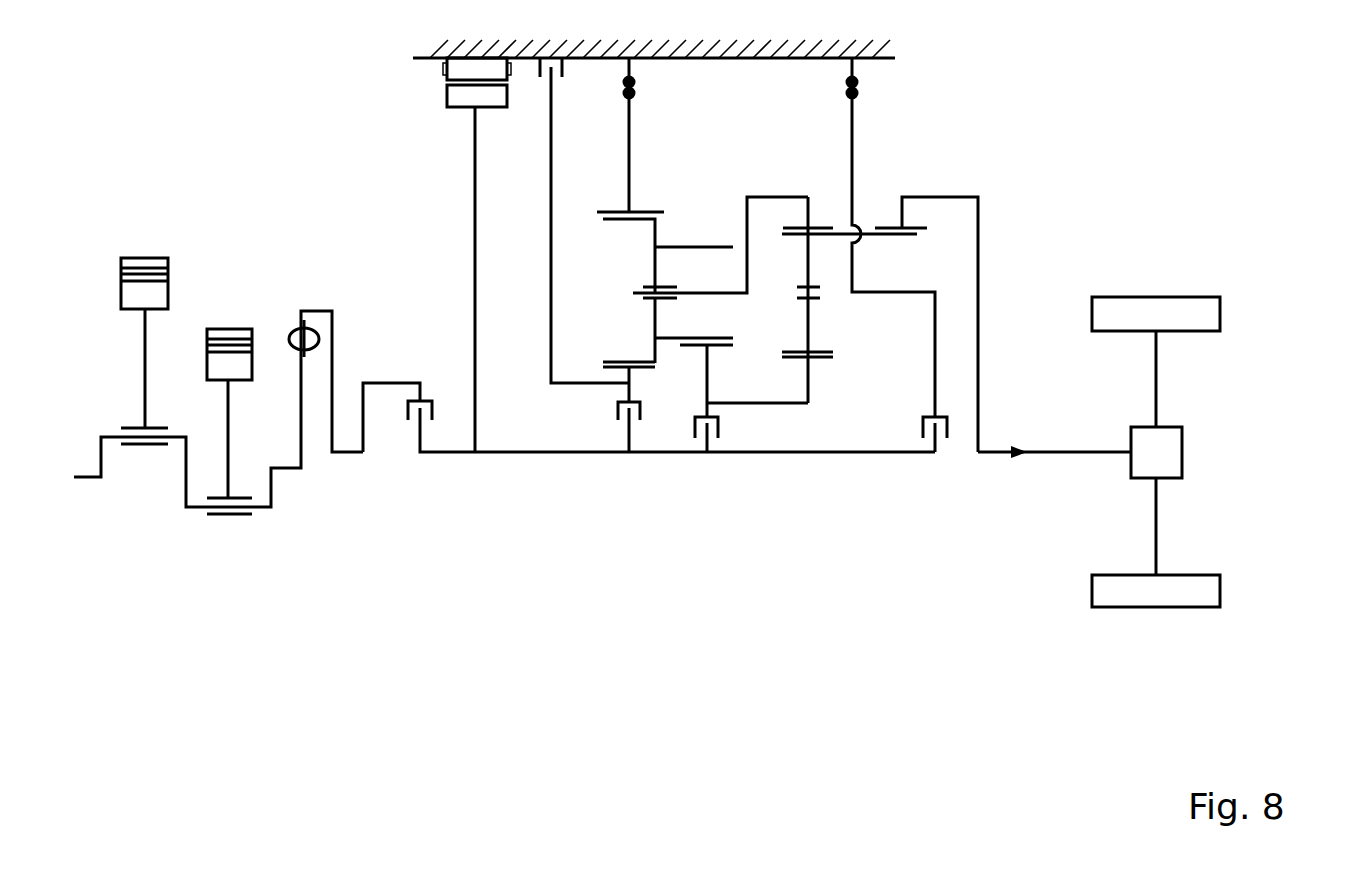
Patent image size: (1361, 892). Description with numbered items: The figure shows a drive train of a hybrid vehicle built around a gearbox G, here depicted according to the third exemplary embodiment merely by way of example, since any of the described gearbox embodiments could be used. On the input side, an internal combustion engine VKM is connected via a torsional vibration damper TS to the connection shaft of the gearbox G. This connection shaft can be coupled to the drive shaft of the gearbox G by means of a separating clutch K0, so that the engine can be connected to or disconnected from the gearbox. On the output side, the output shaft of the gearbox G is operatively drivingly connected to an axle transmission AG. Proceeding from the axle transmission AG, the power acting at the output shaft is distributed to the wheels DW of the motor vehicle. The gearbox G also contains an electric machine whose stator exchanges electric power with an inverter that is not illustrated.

The internal combustion engine VKM is at (188, 552).
The torsional vibration damper TS is at (309, 367).
The separating clutch K0 is at (412, 432).
The gearbox G is at (685, 477).
The axle transmission AG is at (1183, 443).
The wheels DW is at (1202, 297).